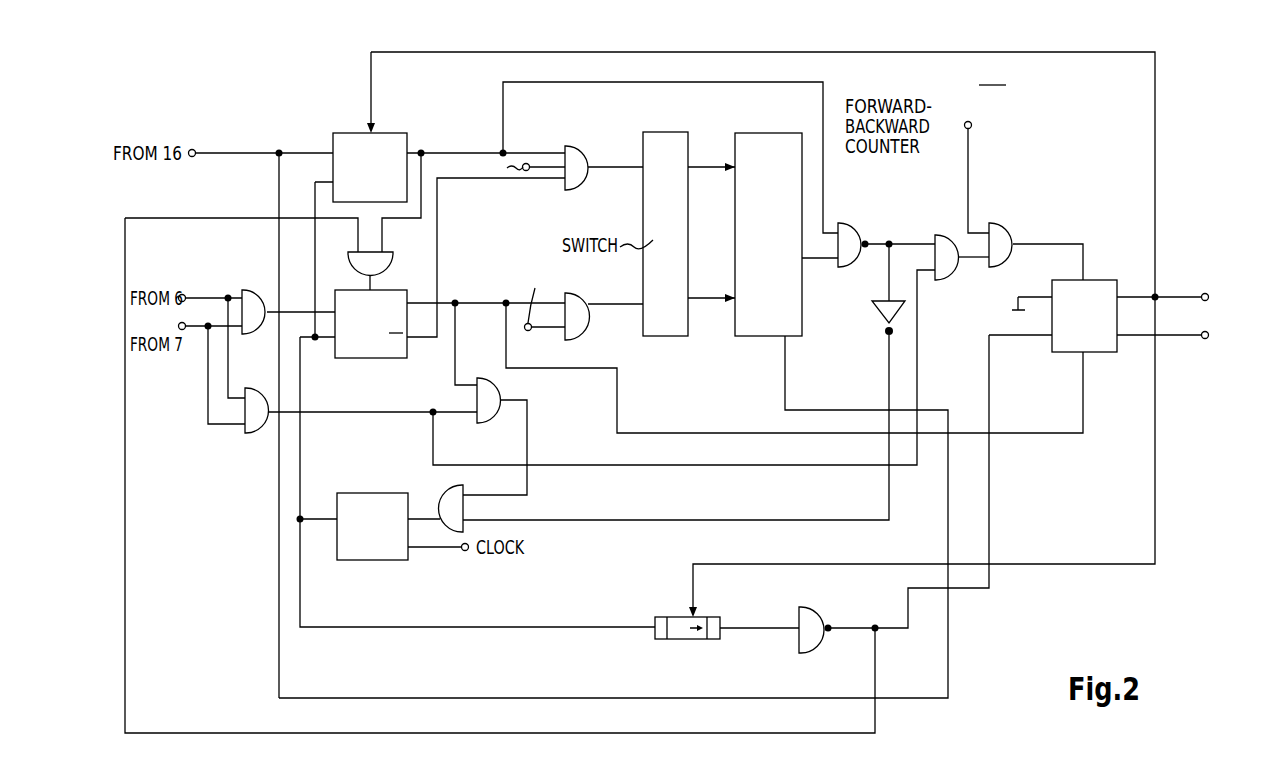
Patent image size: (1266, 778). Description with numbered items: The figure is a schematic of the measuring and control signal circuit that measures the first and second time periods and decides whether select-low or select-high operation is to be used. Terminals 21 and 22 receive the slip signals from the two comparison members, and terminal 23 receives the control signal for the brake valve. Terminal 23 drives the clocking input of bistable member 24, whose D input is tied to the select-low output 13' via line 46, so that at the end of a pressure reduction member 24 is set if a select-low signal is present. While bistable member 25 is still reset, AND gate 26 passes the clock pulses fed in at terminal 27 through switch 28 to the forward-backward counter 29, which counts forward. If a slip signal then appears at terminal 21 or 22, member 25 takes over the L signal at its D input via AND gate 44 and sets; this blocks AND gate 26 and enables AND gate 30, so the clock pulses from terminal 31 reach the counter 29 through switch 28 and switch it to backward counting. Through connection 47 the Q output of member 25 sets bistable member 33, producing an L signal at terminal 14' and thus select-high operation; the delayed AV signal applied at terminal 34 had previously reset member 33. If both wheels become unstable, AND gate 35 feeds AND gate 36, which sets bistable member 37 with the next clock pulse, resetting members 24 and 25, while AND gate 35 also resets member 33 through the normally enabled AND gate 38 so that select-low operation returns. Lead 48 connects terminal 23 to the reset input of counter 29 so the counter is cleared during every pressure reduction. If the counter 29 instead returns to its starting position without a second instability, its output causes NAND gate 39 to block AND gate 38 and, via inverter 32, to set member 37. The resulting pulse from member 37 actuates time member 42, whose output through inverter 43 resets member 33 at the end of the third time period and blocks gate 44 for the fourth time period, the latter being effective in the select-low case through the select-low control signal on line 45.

The select-low output terminal 13' is at (1185, 297).
The select-high output terminal 14' is at (1185, 335).
The terminal 21 is at (184, 296).
The terminal 22 is at (179, 326).
The terminal 23 is at (194, 156).
The bistable member 24 is at (407, 137).
The bistable member 25 is at (377, 342).
The AND gate 26 is at (580, 173).
The clock pulse terminal 27 is at (528, 164).
The switch 28 is at (670, 147).
The forward-backward counter 29 is at (775, 152).
The AND gate 30 is at (577, 318).
The clock pulse terminal 31 is at (530, 331).
The inverter 32 is at (885, 308).
The bistable member 33 is at (1102, 343).
The AV delay input terminal 34 is at (971, 127).
The AND gate 35 is at (248, 423).
The AND gate 36 is at (485, 410).
The bistable member 37 is at (363, 542).
The AND gate 38 is at (943, 263).
The NAND gate 39 is at (845, 235).
The time member 42 is at (690, 633).
The inverter 43 is at (812, 637).
The AND gate 44 is at (378, 265).
The line 45 is at (1082, 567).
The line 46 is at (728, 51).
The connection 47 is at (617, 402).
The lead 48 is at (784, 384).